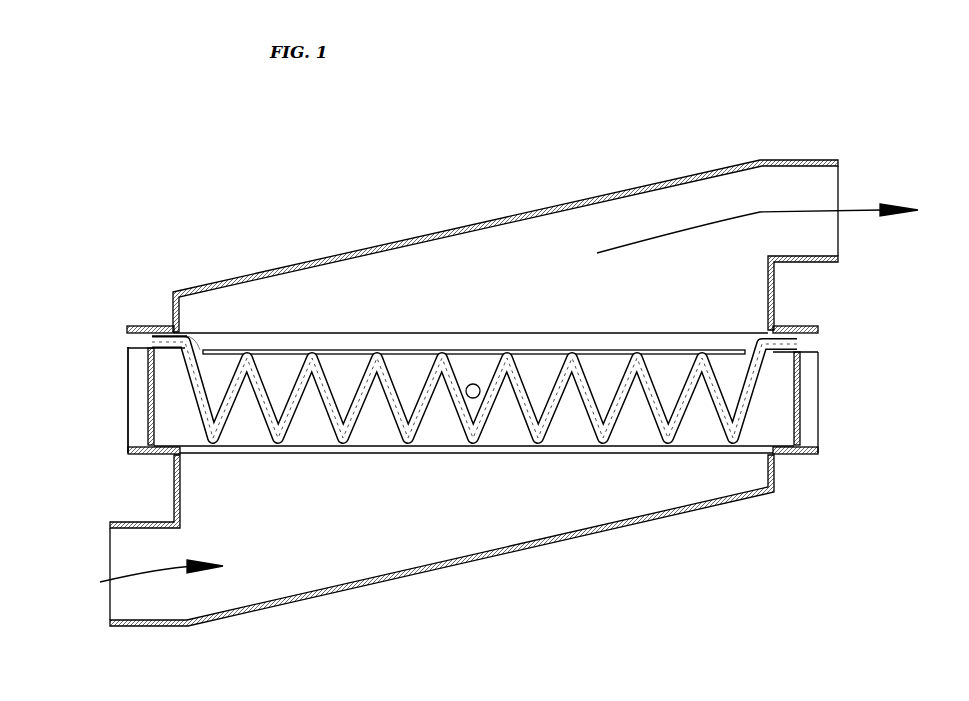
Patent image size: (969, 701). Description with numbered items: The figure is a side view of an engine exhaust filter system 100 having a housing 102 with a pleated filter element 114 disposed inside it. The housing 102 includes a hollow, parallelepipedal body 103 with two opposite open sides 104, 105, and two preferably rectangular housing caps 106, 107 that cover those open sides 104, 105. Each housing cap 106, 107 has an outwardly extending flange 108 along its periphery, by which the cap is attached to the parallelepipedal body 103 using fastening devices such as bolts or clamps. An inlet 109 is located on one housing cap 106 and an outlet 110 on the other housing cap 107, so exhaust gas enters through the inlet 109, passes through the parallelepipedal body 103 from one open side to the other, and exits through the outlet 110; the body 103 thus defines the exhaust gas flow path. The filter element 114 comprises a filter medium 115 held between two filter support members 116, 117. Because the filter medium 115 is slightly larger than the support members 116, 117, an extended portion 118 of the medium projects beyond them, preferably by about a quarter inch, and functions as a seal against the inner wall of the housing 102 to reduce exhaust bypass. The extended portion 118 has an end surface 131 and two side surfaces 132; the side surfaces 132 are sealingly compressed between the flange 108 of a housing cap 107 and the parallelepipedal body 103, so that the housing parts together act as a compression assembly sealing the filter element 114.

The engine exhaust filter system 100 is at (858, 103).
The housing 102 is at (820, 400).
The parallelepipedal body 103 is at (128, 418).
The open side 104 is at (552, 450).
The open side 105 is at (483, 350).
The housing cap 106 is at (295, 602).
The housing cap 107 is at (582, 200).
The flange 108 is at (818, 330).
The inlet 109 is at (108, 581).
The outlet 110 is at (838, 212).
The pleated filter element 114 is at (620, 430).
The filter medium 115 is at (350, 385).
The filter support member 116 is at (427, 418).
The filter support member 117 is at (428, 385).
The extended portion 118 is at (158, 328).
The end surface 131 is at (150, 343).
The side surface 132 is at (172, 325).